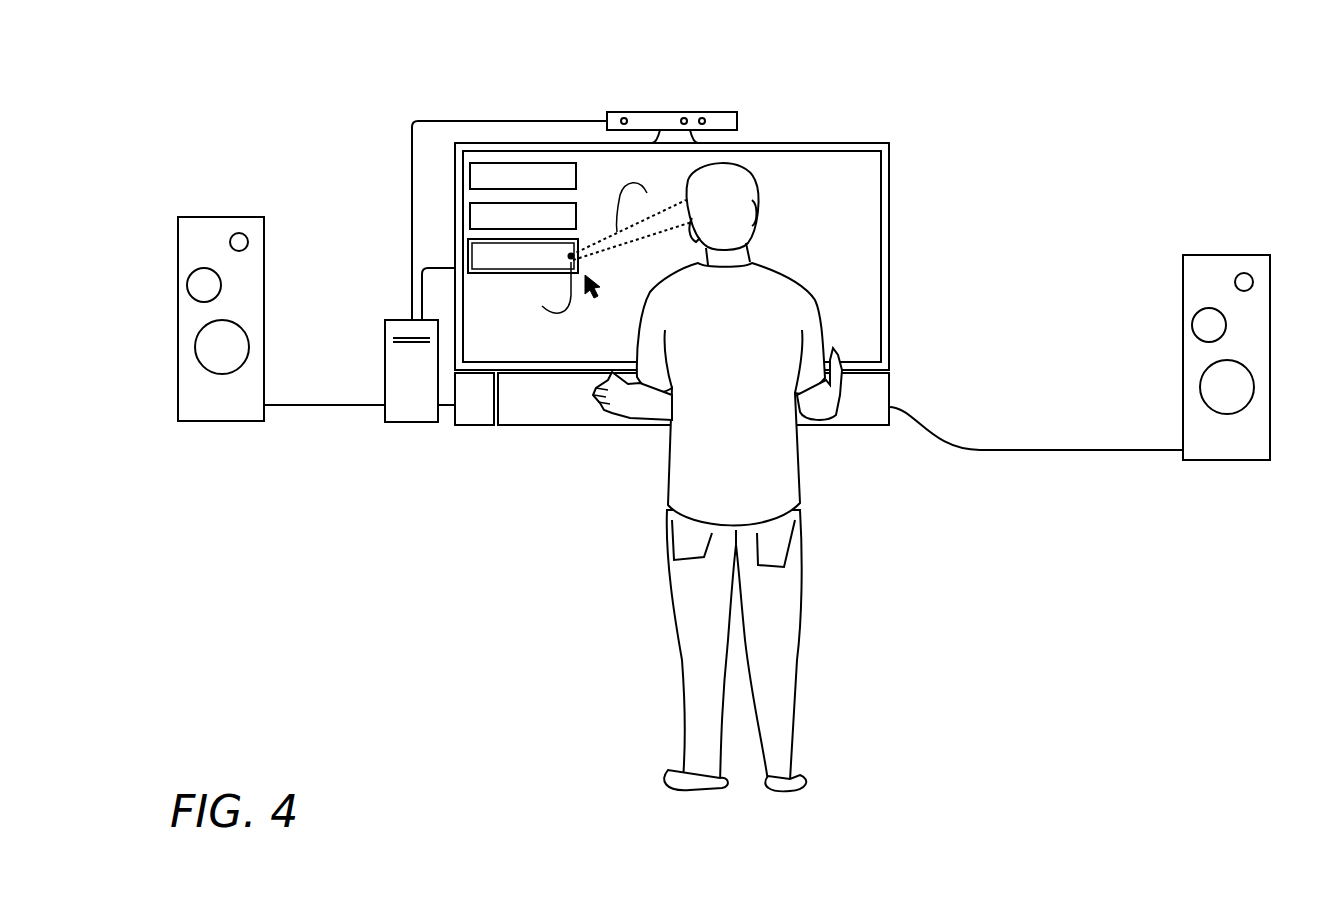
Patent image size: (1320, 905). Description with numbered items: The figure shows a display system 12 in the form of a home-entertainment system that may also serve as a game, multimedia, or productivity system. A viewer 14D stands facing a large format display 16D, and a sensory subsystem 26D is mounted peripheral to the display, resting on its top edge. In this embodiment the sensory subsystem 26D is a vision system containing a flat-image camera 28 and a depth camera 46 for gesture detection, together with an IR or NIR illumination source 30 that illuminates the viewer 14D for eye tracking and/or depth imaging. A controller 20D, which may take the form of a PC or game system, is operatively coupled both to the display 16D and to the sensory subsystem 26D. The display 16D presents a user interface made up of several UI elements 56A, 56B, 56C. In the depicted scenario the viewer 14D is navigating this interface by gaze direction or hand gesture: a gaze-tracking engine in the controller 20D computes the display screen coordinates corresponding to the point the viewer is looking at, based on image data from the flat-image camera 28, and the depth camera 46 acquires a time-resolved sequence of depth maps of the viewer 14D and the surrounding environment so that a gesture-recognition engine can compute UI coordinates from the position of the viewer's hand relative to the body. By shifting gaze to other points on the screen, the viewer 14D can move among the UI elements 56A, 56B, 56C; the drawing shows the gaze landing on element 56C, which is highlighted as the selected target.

The display system 12 is at (304, 163).
The viewer 14D is at (781, 321).
The large format display 16D is at (866, 190).
The controller 20D is at (430, 420).
The sensory subsystem 26D is at (737, 122).
The flat-image camera 28 is at (703, 104).
The illumination source 30 is at (630, 96).
The depth camera 46 is at (683, 104).
The UI element 56A is at (523, 176).
The UI element 56B is at (523, 216).
The UI element 56C is at (523, 256).